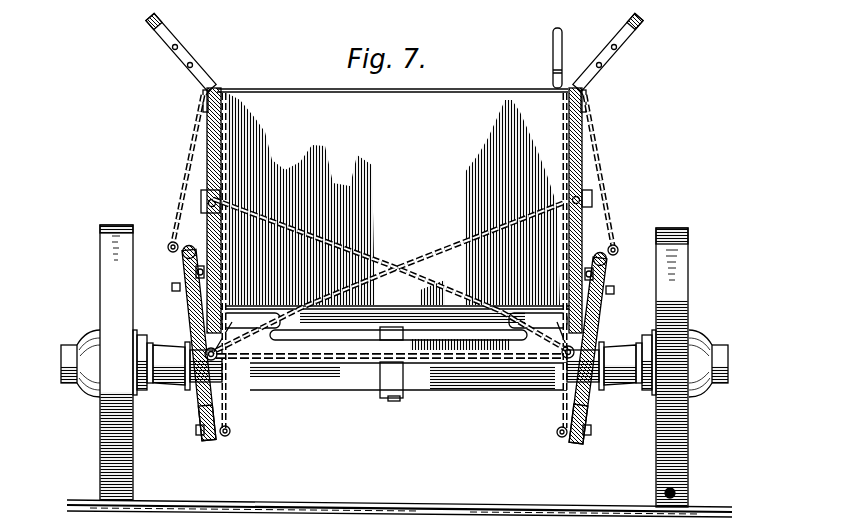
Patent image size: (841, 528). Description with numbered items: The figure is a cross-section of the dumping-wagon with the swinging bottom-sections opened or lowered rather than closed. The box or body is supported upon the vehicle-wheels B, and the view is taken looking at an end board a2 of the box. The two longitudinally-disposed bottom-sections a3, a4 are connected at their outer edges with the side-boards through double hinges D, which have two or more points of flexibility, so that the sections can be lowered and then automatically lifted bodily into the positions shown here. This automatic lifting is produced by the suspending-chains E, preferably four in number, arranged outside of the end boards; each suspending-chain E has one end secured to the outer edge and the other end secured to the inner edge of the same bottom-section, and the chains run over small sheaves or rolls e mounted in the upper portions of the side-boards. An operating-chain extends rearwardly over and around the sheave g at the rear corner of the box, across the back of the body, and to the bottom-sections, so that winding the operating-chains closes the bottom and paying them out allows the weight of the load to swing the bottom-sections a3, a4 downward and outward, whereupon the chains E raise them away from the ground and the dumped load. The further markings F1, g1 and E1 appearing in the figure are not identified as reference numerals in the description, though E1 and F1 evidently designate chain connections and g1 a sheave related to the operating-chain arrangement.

The front vehicle-wheels B is at (133, 465).
The end board a2 is at (502, 92).
The sheaves or rolls e is at (204, 99).
The frame rail F1 is at (283, 313).
The double hinges D is at (196, 272).
The bottom-section a3 is at (203, 412).
The bottom-section a4 is at (587, 423).
The sheave g is at (210, 190).
The bracket pin g1 is at (211, 203).
The suspending-chains E is at (191, 143).
The cross chain E1 is at (200, 194).